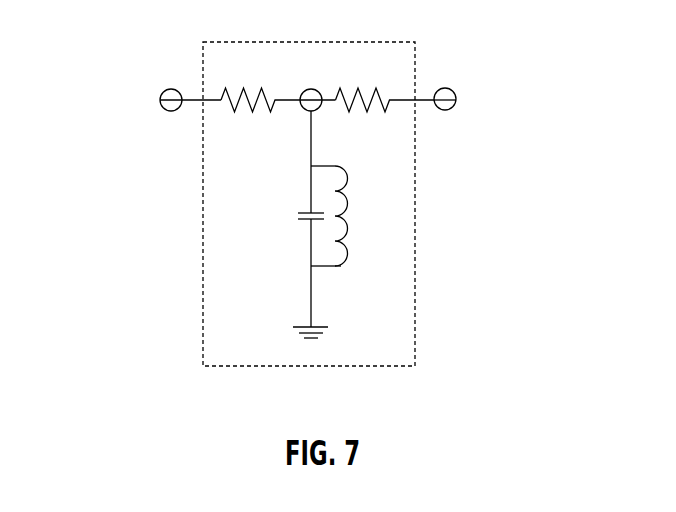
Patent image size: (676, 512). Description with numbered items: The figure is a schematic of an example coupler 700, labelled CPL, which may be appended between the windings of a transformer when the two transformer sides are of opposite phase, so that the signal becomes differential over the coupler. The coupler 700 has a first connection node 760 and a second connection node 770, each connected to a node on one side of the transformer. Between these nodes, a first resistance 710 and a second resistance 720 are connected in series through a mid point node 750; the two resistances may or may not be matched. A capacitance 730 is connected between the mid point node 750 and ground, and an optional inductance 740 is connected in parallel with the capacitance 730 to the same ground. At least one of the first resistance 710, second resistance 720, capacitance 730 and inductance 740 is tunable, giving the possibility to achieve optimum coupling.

The coupler 700 is at (309, 204).
The first resistance 710 is at (222, 98).
The second resistance 720 is at (390, 100).
The capacitance 730 is at (311, 210).
The inductance 740 is at (341, 266).
The mid point node 750 is at (313, 88).
The first connection node 760 is at (171, 89).
The second connection node 770 is at (452, 88).